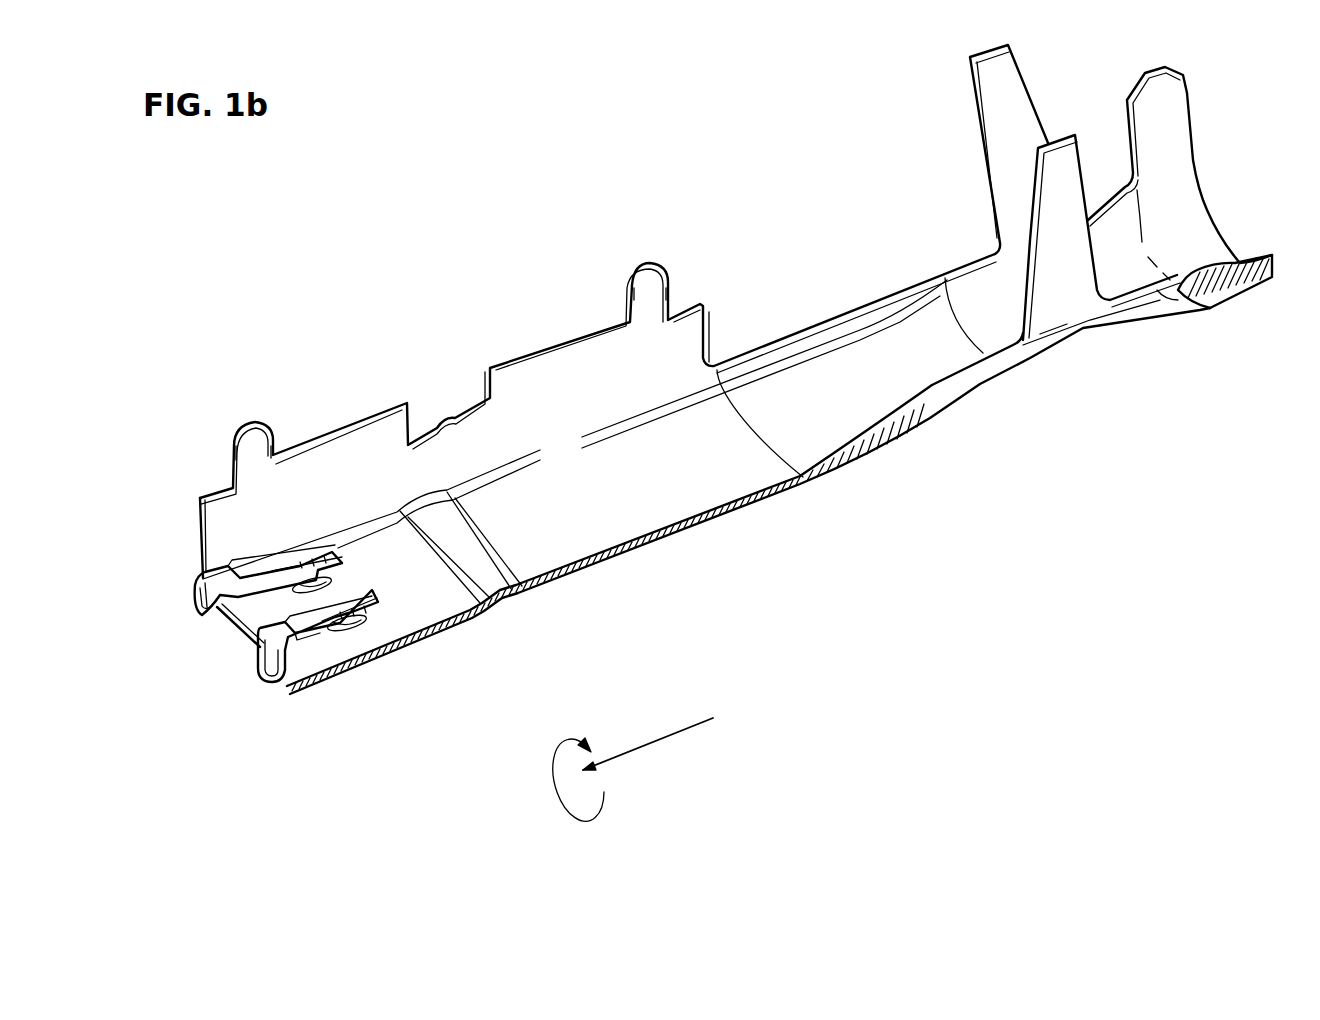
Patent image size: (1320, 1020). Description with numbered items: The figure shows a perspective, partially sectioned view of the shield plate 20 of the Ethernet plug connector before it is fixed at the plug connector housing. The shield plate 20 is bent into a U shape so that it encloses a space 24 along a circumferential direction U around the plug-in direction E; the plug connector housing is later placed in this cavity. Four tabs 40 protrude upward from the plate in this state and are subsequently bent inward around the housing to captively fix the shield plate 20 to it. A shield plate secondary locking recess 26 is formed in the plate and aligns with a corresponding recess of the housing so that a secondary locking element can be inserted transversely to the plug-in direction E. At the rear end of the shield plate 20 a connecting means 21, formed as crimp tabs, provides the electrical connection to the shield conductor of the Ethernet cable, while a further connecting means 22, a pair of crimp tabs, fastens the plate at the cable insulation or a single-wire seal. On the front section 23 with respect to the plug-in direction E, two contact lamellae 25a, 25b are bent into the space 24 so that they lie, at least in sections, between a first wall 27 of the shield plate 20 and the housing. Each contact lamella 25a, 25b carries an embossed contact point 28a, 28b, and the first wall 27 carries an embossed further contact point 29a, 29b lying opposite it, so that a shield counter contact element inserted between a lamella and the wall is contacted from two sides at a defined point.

The shield plate 20 is at (702, 440).
The connecting means 21 is at (1060, 183).
The further connecting means 22 is at (1168, 118).
The front section 23 is at (309, 602).
The space 24 is at (579, 466).
The contact lamella 25a is at (241, 522).
The contact lamella 25b is at (372, 670).
The shield plate secondary locking recess 26 is at (428, 410).
The first wall 27 is at (420, 587).
The contact point 28a is at (312, 558).
The contact point 28b is at (417, 590).
The further contact point 29a is at (270, 603).
The further contact point 29b is at (352, 628).
The tabs 40 is at (253, 445).
The circumferential direction U is at (560, 766).
The plug-in direction E is at (661, 740).